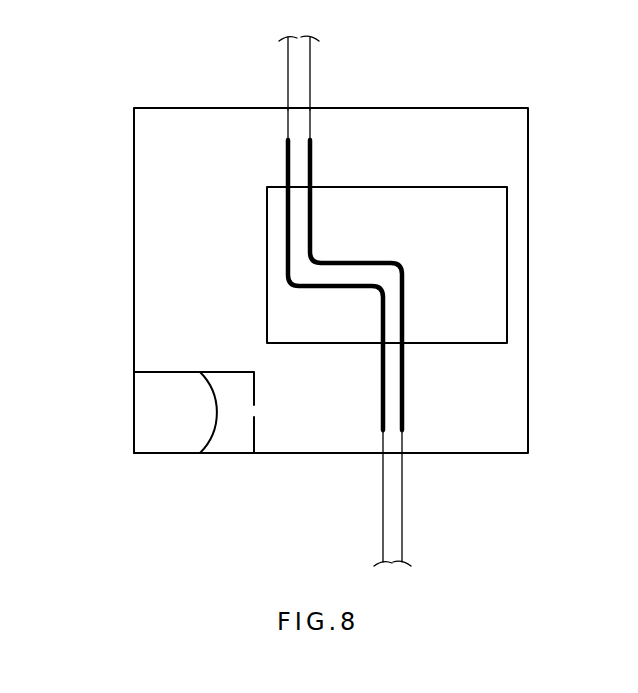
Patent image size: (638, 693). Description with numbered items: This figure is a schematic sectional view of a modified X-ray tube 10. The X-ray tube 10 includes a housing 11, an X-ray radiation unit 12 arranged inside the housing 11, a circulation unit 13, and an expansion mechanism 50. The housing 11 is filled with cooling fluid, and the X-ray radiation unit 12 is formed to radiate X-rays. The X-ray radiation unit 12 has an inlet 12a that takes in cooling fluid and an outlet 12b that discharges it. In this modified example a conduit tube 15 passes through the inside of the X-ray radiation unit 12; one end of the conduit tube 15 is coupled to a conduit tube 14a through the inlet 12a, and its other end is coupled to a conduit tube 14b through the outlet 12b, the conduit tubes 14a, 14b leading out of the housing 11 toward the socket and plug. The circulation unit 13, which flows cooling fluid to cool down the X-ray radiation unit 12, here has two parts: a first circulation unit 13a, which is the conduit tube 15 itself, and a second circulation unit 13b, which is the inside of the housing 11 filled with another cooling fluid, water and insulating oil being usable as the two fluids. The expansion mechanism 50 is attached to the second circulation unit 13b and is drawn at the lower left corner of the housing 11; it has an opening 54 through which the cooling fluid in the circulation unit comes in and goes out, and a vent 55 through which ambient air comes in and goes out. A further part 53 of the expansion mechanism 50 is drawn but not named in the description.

The X-ray tube 10 is at (474, 97).
The housing 11 is at (529, 133).
The X-ray radiation unit 12 is at (508, 221).
The inlet 12a is at (301, 197).
The outlet 12b is at (396, 335).
The circulation unit 13 is at (504, 408).
The first circulation unit 13a is at (395, 300).
The second circulation unit 13b is at (504, 366).
The conduit tube 14a is at (312, 78).
The conduit tube 14b is at (404, 490).
The conduit tube 15 is at (312, 161).
The expansion mechanism 50 is at (178, 457).
The curved contact face 53 is at (214, 385).
The opening 54 is at (261, 412).
The vent 55 is at (129, 407).